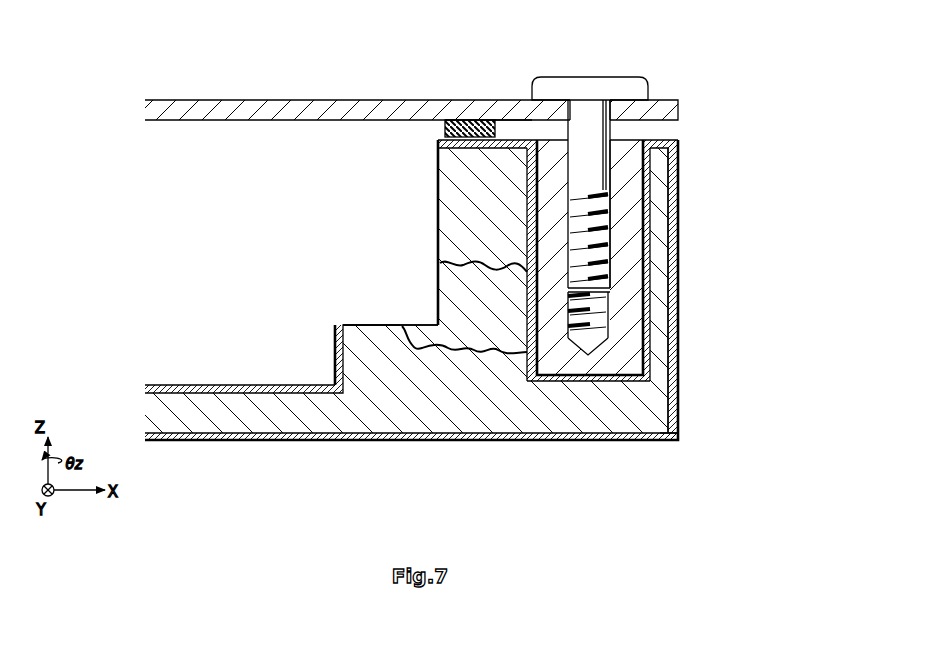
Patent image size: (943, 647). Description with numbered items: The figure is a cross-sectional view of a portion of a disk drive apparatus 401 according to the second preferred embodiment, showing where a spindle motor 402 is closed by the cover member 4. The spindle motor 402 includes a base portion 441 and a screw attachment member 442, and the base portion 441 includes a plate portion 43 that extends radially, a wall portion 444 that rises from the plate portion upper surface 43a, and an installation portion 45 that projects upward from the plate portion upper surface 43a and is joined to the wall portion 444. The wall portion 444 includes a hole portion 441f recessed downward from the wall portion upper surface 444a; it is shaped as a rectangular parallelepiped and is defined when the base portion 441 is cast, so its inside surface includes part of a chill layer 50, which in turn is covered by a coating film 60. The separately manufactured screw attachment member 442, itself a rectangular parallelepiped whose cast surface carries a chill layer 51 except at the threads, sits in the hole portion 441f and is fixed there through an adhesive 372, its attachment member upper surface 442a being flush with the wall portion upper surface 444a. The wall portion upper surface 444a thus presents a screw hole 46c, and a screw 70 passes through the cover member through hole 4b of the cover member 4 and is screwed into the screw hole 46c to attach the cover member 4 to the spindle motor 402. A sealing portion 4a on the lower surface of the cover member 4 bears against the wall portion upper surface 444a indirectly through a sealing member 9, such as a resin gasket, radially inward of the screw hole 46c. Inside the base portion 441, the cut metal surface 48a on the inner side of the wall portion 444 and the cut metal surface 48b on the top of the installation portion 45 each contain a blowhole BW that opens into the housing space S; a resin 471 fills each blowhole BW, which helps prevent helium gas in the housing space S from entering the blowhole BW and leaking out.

The cover member 4 is at (258, 112).
The sealing portion 4a is at (440, 125).
The cover member through hole 4b is at (577, 97).
The sealing member 9 is at (462, 118).
The screw 70 is at (603, 85).
The screw hole 46c is at (611, 322).
The base portion 441 is at (443, 444).
The hole portion 441f is at (628, 170).
The screw attachment member 442 is at (578, 368).
The attachment member upper surface 442a is at (642, 172).
The wall portion 444 is at (488, 158).
The wall portion upper surface 444a is at (656, 142).
The adhesive 372 is at (610, 380).
The plate portion 43 is at (196, 425).
The plate portion upper surface 43a is at (183, 385).
The installation portion 45 is at (372, 350).
The metal surface 48a is at (438, 208).
The metal surface 48b is at (360, 323).
The resin 471 is at (466, 263).
The blowhole BW is at (406, 337).
The chill layer 50 is at (673, 393).
The chill layer 51 is at (678, 192).
The coating film 60 is at (679, 268).
The housing space S is at (201, 201).
The disk drive apparatus 401 is at (762, 60).
The spindle motor 402 is at (716, 146).